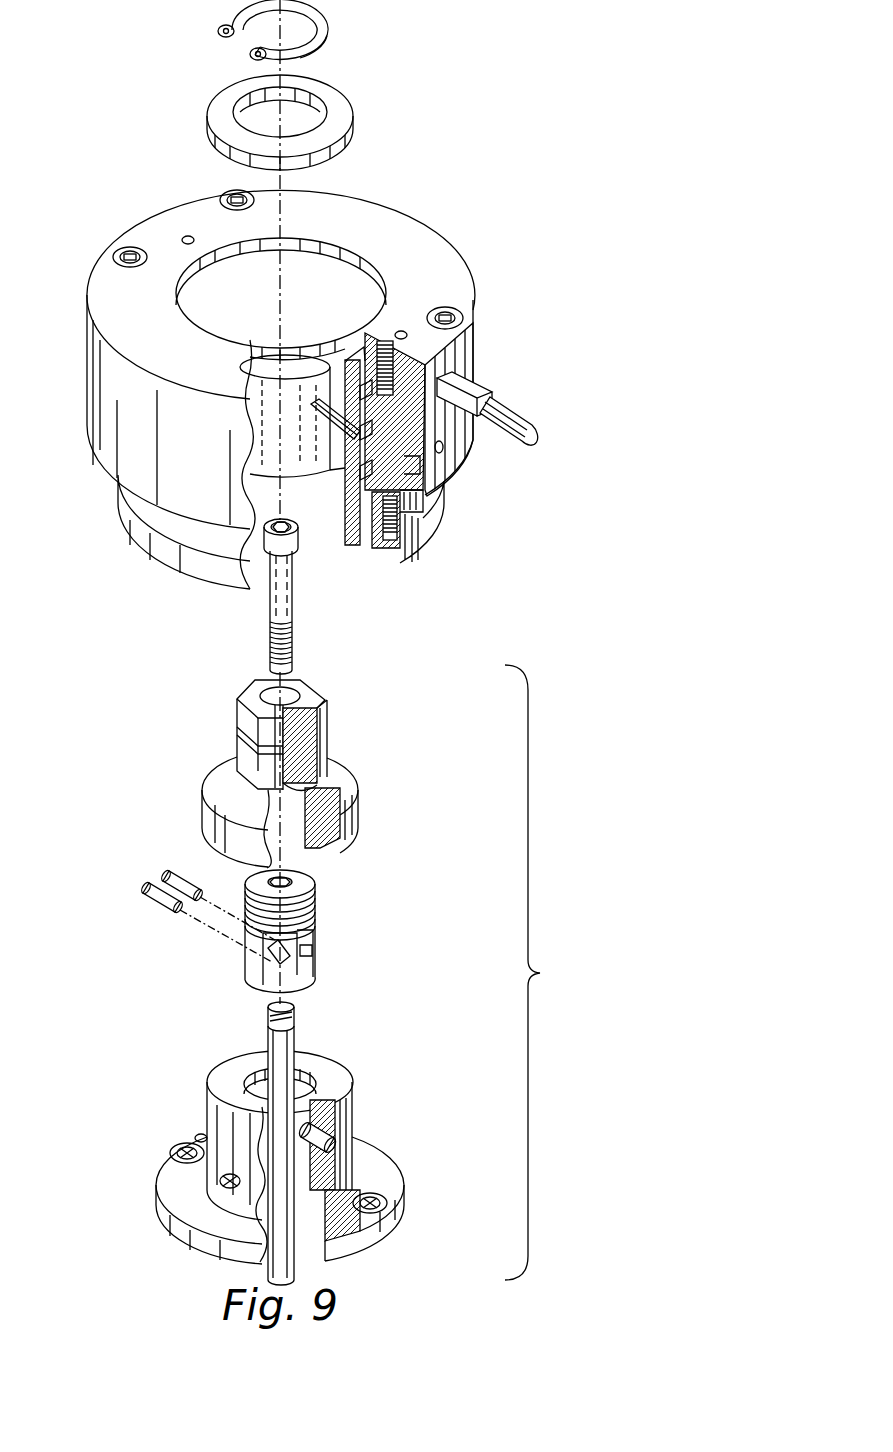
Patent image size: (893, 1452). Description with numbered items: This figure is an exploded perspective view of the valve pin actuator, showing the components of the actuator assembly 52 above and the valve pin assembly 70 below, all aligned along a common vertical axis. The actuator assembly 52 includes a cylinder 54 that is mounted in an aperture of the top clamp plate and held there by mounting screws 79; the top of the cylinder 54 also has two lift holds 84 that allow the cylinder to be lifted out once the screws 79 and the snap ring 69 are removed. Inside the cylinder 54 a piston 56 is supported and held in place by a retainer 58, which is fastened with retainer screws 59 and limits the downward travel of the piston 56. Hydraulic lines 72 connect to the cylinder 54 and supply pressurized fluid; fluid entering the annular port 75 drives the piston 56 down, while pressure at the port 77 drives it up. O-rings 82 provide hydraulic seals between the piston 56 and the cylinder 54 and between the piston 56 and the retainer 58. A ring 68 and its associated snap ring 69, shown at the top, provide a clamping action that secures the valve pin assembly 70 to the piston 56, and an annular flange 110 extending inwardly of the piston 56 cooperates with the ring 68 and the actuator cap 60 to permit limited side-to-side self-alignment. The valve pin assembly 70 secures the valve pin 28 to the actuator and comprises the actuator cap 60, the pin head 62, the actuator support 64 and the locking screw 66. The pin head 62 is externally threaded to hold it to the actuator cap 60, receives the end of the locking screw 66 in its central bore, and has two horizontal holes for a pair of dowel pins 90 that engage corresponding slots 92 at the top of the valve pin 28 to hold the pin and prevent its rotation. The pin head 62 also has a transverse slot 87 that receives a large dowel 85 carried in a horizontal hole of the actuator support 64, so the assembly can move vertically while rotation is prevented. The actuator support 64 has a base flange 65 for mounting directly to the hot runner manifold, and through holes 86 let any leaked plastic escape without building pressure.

The valve pin 28 is at (280, 1238).
The actuator assembly 52 is at (512, 235).
The cylinder 54 is at (430, 227).
The piston 56 is at (355, 547).
The retainer 58 is at (374, 549).
The retainer screws 59 is at (392, 560).
The actuator cap 60 is at (350, 762).
The pin head 62 is at (320, 906).
The actuator support 64 is at (330, 1068).
The base flange 65 is at (390, 1170).
The locking screw 66 is at (270, 643).
The ring 68 is at (353, 128).
The snap ring 69 is at (329, 29).
The valve pin assembly 70 is at (540, 973).
The hydraulic lines 72 is at (537, 432).
The annular port 75 is at (425, 468).
The port 77 is at (405, 492).
The mounting screws 79 is at (233, 197).
The O-rings 82 is at (347, 440).
The lift holds 84 is at (186, 236).
The dowel 85 is at (337, 1145).
The through holes 86 is at (223, 1182).
The slot 87 is at (303, 948).
The dowel pins 90 is at (160, 918).
The slots 92 is at (266, 1023).
The annular flange 110 is at (312, 345).